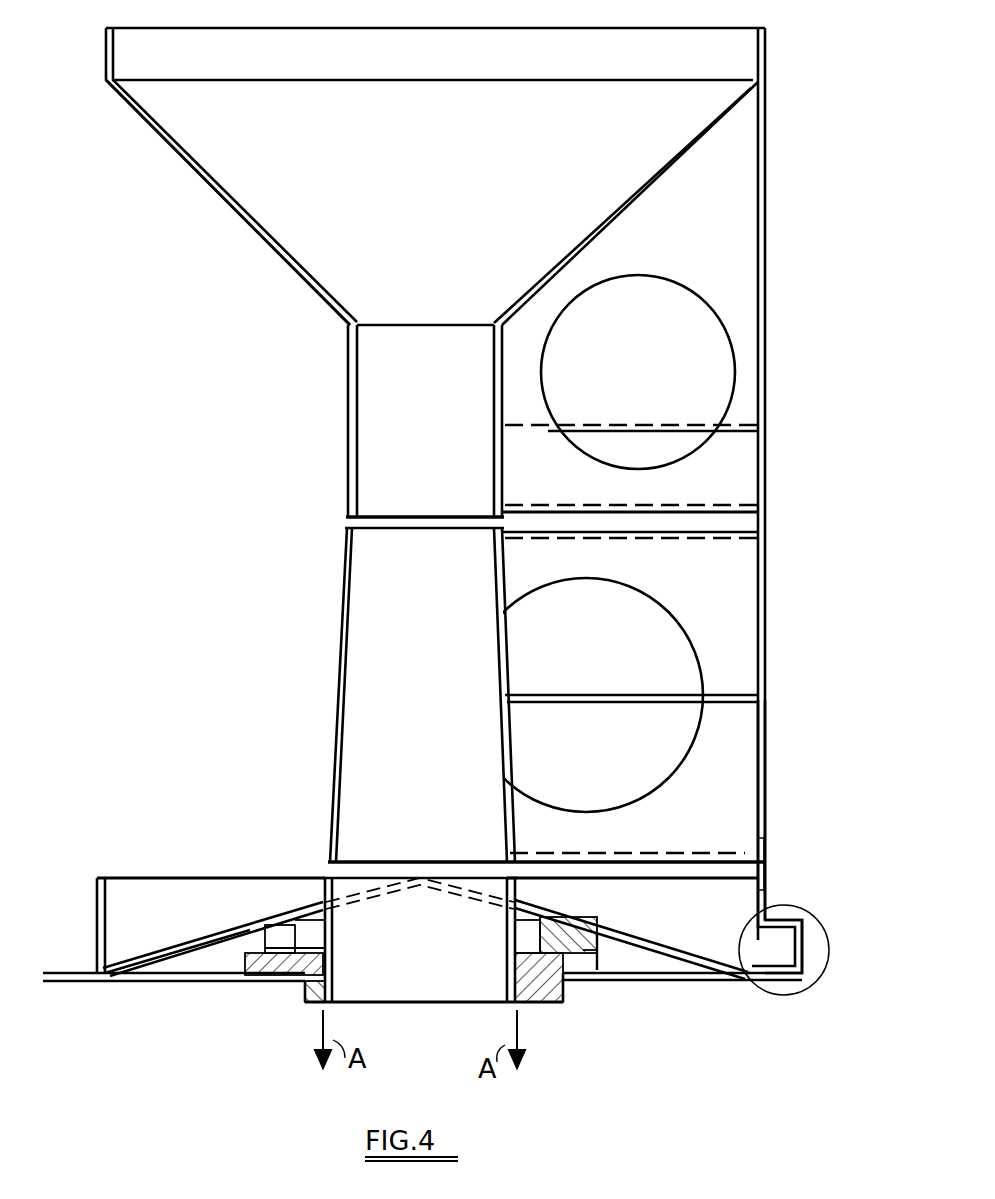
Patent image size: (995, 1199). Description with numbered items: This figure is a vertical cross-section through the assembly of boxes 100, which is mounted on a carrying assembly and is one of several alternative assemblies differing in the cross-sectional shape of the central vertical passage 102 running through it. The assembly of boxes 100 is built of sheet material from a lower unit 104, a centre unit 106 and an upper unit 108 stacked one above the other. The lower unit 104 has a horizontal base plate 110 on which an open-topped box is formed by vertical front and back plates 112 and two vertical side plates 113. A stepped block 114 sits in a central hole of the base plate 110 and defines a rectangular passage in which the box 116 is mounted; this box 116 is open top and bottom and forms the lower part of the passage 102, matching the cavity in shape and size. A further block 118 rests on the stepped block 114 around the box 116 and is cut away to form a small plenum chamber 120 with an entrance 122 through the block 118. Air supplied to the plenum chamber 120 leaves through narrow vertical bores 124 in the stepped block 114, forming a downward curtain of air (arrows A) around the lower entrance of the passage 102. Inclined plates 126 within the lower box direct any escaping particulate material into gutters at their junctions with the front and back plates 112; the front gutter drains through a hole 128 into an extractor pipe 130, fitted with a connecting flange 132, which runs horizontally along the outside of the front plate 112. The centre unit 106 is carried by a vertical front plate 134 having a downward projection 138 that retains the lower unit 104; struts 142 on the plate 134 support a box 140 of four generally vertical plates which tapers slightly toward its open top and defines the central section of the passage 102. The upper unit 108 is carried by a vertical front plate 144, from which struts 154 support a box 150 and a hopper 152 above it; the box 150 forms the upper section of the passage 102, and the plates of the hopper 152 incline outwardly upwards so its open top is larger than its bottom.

The assembly of boxes 100 is at (230, 385).
The central vertical passage 102 is at (492, 962).
The lower unit 104 is at (230, 880).
The centre unit 106 is at (388, 752).
The upper unit 108 is at (250, 180).
The base plate 110 is at (120, 985).
The front and back plates 112 is at (97, 897).
The side plates 113 is at (155, 885).
The stepped block 114 is at (307, 1003).
The box 116 is at (333, 940).
The further block 118 is at (627, 987).
The plenum chamber 120 is at (600, 947).
The entrance 122 is at (165, 963).
The narrow vertical bores 124 is at (307, 983).
The inclined plates 126 is at (153, 983).
The hole 128 is at (770, 930).
The extractor pipe 130 is at (787, 973).
The connecting flange 132 is at (817, 963).
The front plate 134 is at (763, 730).
The downward projection 138 is at (765, 863).
The box 140 is at (340, 637).
The struts 142 is at (588, 568).
The front plate 144 is at (762, 290).
The box 150 is at (348, 355).
The hopper 152 is at (277, 255).
The struts 154 is at (623, 260).